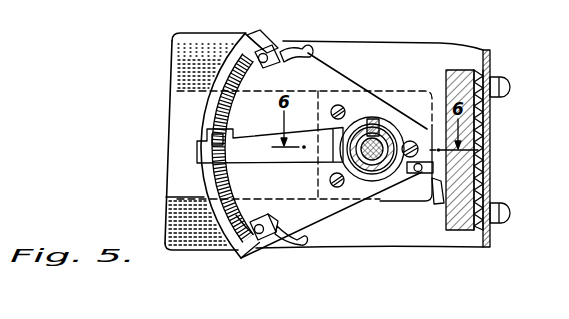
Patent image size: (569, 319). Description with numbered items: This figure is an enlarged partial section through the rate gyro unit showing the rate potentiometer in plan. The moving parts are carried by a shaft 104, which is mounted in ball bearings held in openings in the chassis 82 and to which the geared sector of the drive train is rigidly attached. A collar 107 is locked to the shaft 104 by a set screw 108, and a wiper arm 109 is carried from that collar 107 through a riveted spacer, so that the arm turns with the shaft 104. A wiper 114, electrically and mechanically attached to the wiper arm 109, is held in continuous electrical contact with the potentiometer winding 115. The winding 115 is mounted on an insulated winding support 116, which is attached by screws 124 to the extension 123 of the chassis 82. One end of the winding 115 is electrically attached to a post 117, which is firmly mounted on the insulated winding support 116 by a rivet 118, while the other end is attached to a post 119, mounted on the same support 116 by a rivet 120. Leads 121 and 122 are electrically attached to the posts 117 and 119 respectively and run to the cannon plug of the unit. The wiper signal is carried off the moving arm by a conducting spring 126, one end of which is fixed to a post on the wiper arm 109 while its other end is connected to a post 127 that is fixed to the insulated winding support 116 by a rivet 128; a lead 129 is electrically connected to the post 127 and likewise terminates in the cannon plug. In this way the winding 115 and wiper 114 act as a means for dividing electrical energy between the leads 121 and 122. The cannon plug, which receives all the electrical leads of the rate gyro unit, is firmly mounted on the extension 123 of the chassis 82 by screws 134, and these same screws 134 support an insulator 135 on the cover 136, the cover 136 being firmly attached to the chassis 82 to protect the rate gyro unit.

The chassis 82 is at (462, 70).
The shaft 104 is at (346, 146).
The collar 107 is at (397, 130).
The set screw 108 is at (379, 120).
The wiper arm 109 is at (247, 148).
The wiper 114 is at (213, 130).
The potentiometer winding 115 is at (233, 230).
The insulated winding support 116 is at (322, 72).
The post 117 is at (272, 48).
The rivet 118 is at (266, 53).
The post 119 is at (262, 218).
The rivet 120 is at (273, 243).
The lead 121 is at (308, 47).
The lead 122 is at (302, 243).
The extension 123 is at (181, 104).
The screws 124 is at (341, 104).
The conducting spring 126 is at (378, 199).
The post 127 is at (412, 156).
The rivet 128 is at (418, 174).
The lead 129 is at (444, 190).
The screws 134 is at (510, 87).
The insulator 135 is at (487, 153).
The cover 136 is at (487, 240).